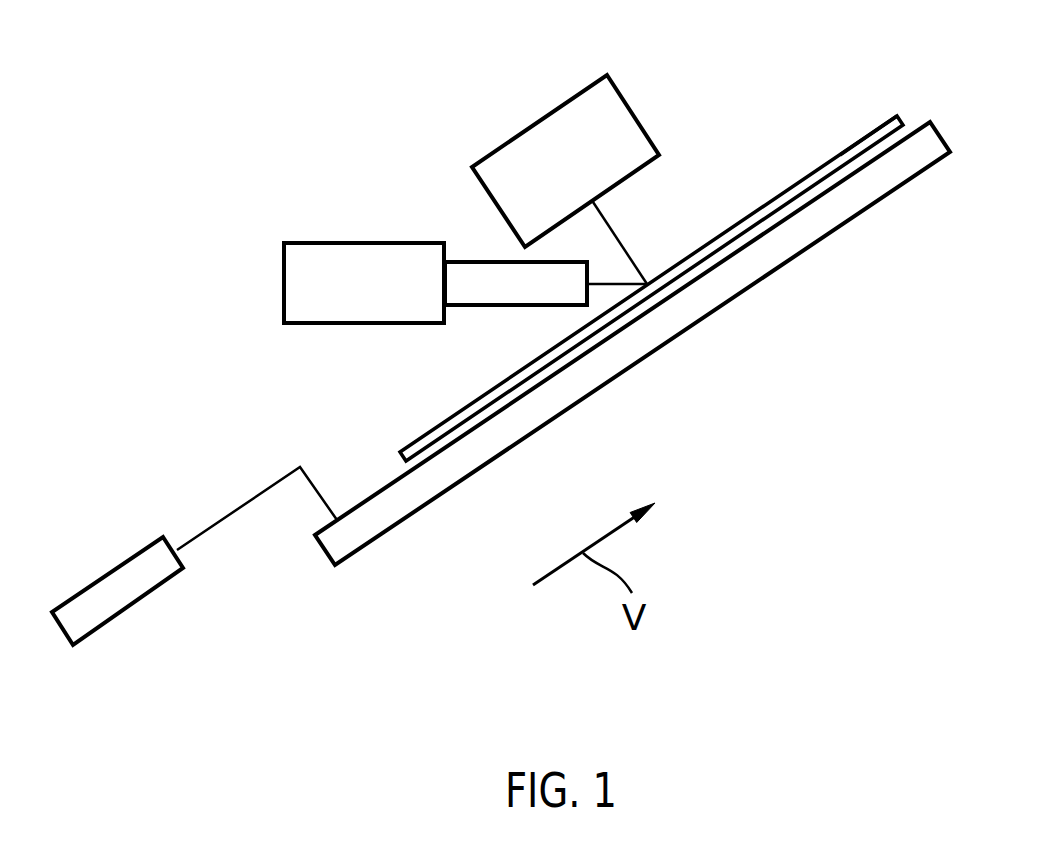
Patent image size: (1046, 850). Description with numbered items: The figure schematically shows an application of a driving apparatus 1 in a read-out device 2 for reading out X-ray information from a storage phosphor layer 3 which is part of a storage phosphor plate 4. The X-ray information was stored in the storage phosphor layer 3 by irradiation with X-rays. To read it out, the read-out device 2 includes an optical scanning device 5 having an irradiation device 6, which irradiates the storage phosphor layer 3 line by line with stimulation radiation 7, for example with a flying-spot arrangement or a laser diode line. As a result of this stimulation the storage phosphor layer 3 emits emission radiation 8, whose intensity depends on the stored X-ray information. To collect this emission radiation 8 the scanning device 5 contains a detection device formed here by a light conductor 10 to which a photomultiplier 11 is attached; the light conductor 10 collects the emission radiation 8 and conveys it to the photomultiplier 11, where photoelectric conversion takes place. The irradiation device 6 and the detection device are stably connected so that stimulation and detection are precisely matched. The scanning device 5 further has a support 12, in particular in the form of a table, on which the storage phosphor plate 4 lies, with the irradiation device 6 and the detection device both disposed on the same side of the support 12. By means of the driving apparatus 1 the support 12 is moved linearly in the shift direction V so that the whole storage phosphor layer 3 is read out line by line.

The driving apparatus 1 is at (118, 602).
The read-out device 2 is at (122, 82).
The storage phosphor layer 3 is at (783, 160).
The storage phosphor plate 4 is at (872, 138).
The optical scanning device 5 is at (381, 148).
The irradiation device 6 is at (555, 127).
The stimulation radiation 7 is at (627, 250).
The emission radiation 8 is at (608, 283).
The light conductor 10 is at (513, 292).
The photomultiplier 11 is at (295, 282).
The support 12 is at (818, 227).